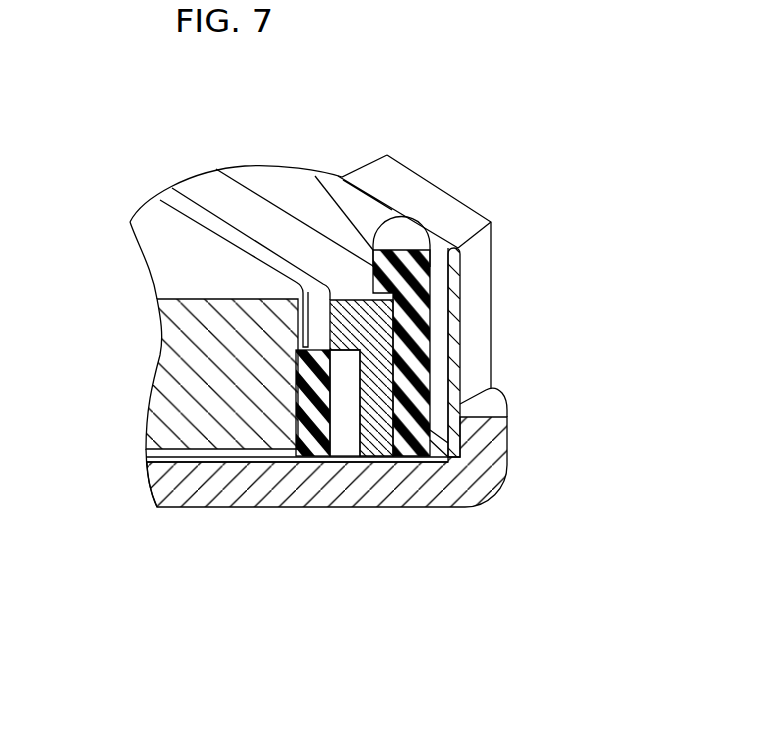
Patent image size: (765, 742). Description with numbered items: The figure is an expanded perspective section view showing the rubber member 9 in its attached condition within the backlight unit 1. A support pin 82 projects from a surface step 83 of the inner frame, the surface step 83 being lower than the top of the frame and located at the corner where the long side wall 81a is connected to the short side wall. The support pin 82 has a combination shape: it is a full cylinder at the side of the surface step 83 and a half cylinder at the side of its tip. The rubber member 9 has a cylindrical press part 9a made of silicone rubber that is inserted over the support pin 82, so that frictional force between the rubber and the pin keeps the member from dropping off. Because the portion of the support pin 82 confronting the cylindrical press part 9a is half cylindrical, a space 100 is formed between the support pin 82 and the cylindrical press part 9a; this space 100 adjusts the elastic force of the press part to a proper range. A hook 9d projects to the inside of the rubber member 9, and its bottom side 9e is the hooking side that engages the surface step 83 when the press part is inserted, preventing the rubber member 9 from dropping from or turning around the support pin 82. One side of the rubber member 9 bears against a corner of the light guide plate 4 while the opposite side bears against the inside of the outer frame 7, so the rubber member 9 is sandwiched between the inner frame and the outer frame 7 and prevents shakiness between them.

The imaging unit 1 is at (485, 204).
The light guide plate 4 is at (188, 383).
The outer frame 7 is at (497, 447).
The rubber member 9 is at (441, 338).
The cylindrical press part 9a is at (333, 440).
The hook 9d is at (375, 255).
The bottom side 9e is at (366, 310).
The long side wall 81a is at (262, 182).
The support pin 82 is at (377, 452).
The surface step 83 is at (307, 260).
The space 100 is at (348, 415).